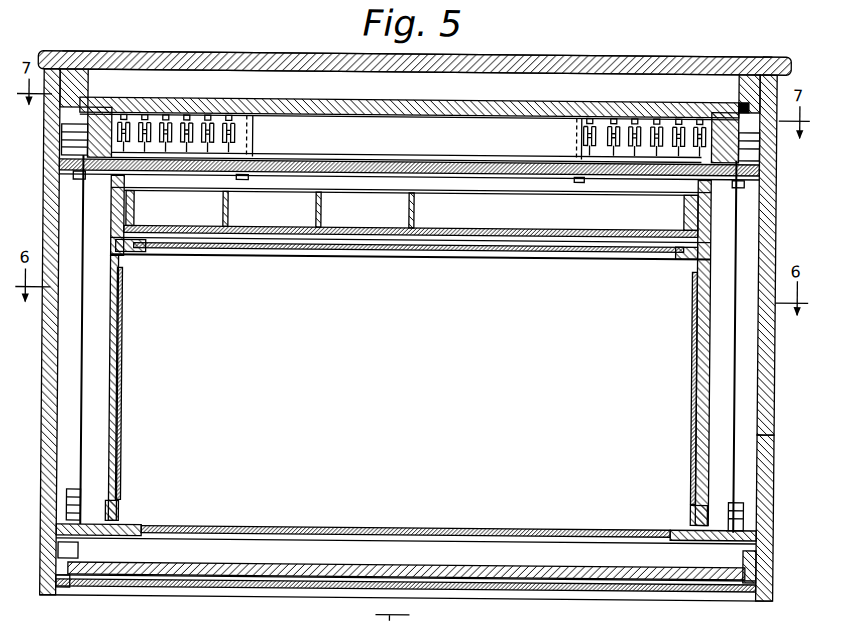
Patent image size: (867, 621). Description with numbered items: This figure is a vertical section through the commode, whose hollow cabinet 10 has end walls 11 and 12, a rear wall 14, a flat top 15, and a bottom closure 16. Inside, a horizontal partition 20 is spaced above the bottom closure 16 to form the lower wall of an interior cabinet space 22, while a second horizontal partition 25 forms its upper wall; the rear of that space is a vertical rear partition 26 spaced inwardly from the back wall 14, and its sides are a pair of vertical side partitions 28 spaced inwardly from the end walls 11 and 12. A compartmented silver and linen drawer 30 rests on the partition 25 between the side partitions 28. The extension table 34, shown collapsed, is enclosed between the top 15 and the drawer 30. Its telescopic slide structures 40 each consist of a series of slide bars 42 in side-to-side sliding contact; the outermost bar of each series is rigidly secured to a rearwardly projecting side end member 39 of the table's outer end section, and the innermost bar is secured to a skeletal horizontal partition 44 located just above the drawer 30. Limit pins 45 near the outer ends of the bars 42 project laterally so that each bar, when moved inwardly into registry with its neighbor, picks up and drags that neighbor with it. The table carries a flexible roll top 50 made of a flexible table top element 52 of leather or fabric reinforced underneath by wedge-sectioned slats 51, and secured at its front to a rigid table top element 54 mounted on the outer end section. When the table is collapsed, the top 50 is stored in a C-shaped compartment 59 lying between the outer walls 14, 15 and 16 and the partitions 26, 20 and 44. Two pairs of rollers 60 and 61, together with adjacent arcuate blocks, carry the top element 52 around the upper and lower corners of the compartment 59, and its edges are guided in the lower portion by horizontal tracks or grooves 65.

The cabinet 10 is at (776, 424).
The end wall 11 is at (47, 362).
The end wall 12 is at (776, 366).
The rear wall 14 is at (486, 85).
The flat top 15 is at (592, 58).
The bottom closure 16 is at (488, 589).
The horizontal partition 20 is at (342, 527).
The interior cabinet space 22 is at (216, 528).
The second horizontal partition 25 is at (284, 257).
The vertical rear partition 26 is at (258, 528).
The vertical side partitions 28 is at (123, 418).
The silver and linen drawer 30 is at (353, 222).
The extension table 34 is at (268, 97).
The side end members 39 is at (115, 125).
The telescopic slide structures 40 is at (256, 140).
The slide bars 42 is at (164, 120).
The skeletal horizontal partition 44 is at (470, 178).
The limit pins 45 is at (230, 117).
The flexible roll top 50 is at (106, 582).
The slats 51 is at (628, 565).
The flexible table top element 52 is at (540, 590).
The rigid table top element 54 is at (312, 100).
The C-shaped compartment 59 is at (668, 83).
The rollers 60 is at (80, 185).
The rollers 61 is at (80, 494).
The horizontal tracks or grooves 65 is at (740, 96).